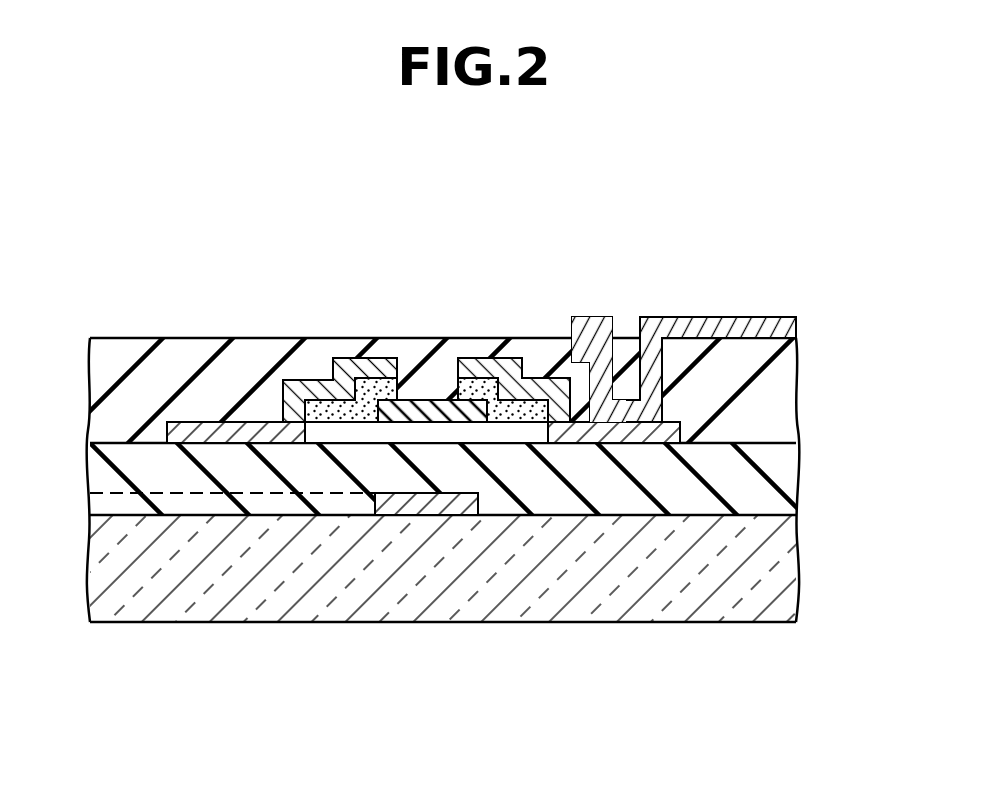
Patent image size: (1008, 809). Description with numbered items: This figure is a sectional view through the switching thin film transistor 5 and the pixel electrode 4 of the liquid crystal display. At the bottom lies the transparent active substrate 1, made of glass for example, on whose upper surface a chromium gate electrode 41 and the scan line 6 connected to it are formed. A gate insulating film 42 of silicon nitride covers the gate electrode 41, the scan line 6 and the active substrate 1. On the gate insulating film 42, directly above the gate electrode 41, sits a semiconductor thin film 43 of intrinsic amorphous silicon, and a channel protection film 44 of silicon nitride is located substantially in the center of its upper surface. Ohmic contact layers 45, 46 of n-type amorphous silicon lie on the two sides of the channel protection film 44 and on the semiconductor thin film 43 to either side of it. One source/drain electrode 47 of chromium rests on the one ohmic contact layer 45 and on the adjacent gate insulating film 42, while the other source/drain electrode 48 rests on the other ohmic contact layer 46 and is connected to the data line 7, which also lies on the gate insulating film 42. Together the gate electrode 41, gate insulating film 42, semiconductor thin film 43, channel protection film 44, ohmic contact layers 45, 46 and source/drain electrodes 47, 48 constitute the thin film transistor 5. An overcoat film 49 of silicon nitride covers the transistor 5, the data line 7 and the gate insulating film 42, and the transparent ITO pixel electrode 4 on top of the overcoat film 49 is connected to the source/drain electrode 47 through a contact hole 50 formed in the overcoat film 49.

The active substrate 1 is at (775, 557).
The pixel electrode 4 is at (722, 332).
The switching thin film transistor 5 is at (426, 441).
The scan line 6 is at (255, 502).
The data line 7 is at (190, 428).
The gate electrode 41 is at (402, 508).
The gate insulating film 42 is at (775, 468).
The semiconductor thin film 43 is at (507, 435).
The channel protection film 44 is at (453, 413).
The ohmic contact layer 45 is at (485, 390).
The ohmic contact layer 46 is at (380, 397).
The source/drain electrode 47 is at (537, 390).
The source/drain electrode 48 is at (313, 388).
The overcoat film 49 is at (775, 385).
The contact hole 50 is at (596, 362).